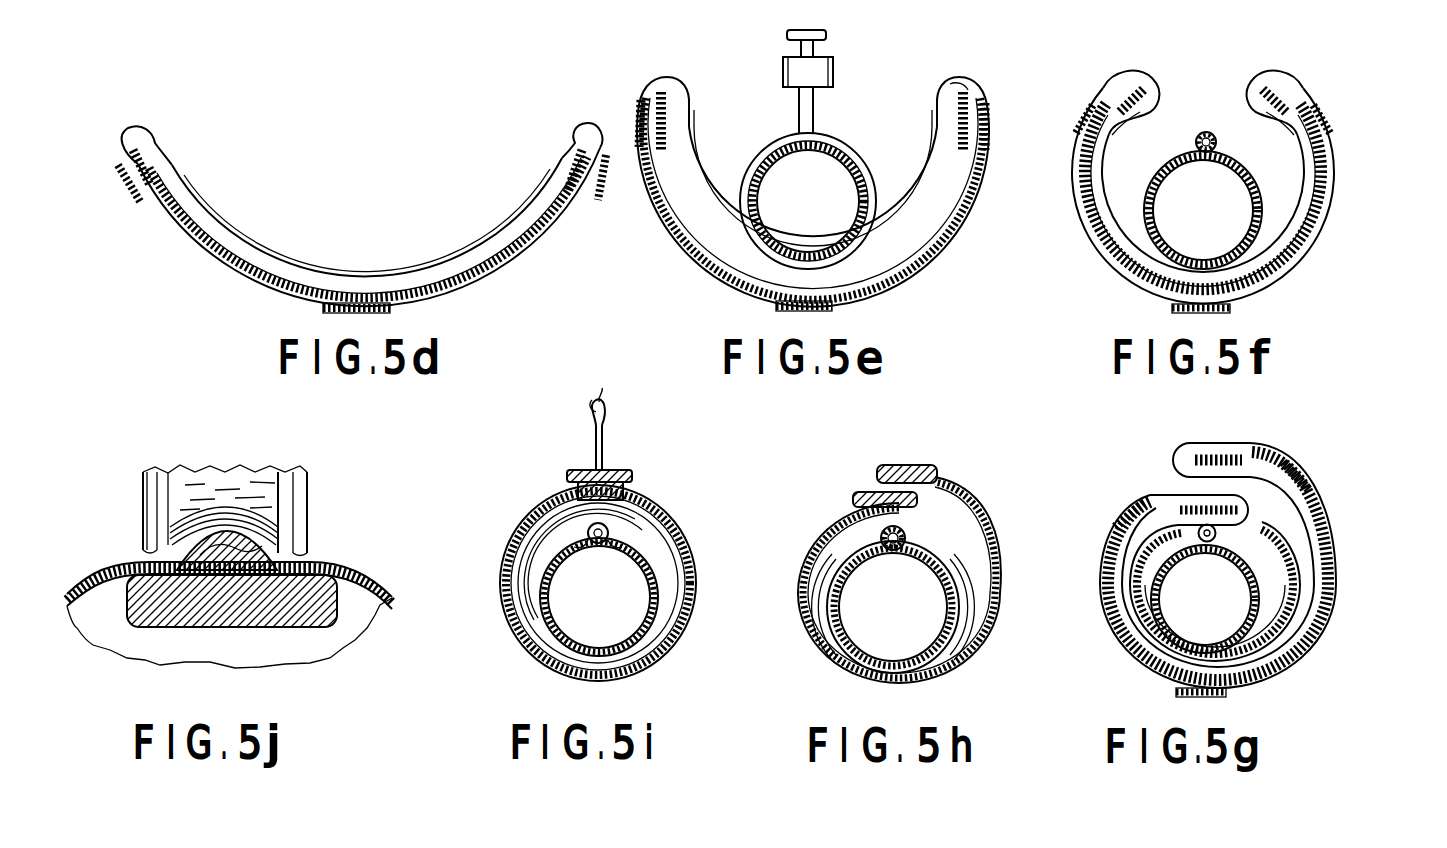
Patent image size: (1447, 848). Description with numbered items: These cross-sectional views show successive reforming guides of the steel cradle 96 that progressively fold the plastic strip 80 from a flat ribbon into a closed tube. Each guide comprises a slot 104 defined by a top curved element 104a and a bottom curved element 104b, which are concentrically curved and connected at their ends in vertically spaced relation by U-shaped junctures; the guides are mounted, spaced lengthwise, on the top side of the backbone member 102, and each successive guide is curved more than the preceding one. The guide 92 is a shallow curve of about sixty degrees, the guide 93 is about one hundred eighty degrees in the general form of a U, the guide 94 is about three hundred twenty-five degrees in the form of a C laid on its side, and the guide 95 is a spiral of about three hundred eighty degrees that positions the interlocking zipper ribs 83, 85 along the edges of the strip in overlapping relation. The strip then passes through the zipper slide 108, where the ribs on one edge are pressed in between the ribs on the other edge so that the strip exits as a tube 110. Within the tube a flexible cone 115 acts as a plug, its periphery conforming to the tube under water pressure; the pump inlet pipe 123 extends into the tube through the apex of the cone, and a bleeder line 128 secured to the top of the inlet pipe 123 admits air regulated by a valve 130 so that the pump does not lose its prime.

In FIG. 5D, the plastic strip 80 is at (530, 247).
In FIG. 5E, the plastic strip 80 is at (890, 268).
In FIG. 5F, the plastic strip 80 is at (1098, 222).
In FIG. 5J, the plastic strip 80 is at (362, 573).
In FIG. 5I, the plastic strip 80 is at (508, 620).
In FIG. 5H, the plastic strip 80 is at (803, 610).
In FIG. 5G, the plastic strip 80 is at (1108, 630).
In FIG. 5D, the zipper rib 83 is at (145, 168).
In FIG. 5E, the zipper rib 83 is at (672, 98).
In FIG. 5F, the zipper rib 83 is at (1127, 97).
In FIG. 5J, the zipper rib 83 is at (257, 570).
In FIG. 5I, the zipper rib 83 is at (633, 488).
In FIG. 5H, the zipper rib 83 is at (910, 507).
In FIG. 5G, the zipper rib 83 is at (1250, 523).
In FIG. 5D, the zipper rib 85 is at (584, 137).
In FIG. 5E, the zipper rib 85 is at (968, 97).
In FIG. 5F, the zipper rib 85 is at (1300, 90).
In FIG. 5J, the zipper rib 85 is at (250, 535).
In FIG. 5I, the zipper rib 85 is at (607, 472).
In FIG. 5H, the zipper rib 85 is at (907, 463).
In FIG. 5G, the zipper rib 85 is at (1217, 445).
In FIG. 5D, the reforming guide 92 is at (587, 125).
In FIG. 5E, the reforming guide 93 is at (950, 87).
In FIG. 5F, the reforming guide 94 is at (1336, 203).
In FIG. 5G, the reforming guide 95 is at (1312, 500).
In FIG. 5D, the steel cradle 96 is at (122, 168).
In FIG. 5E, the steel cradle 96 is at (641, 102).
In FIG. 5F, the steel cradle 96 is at (1075, 142).
In FIG. 5G, the steel cradle 96 is at (1296, 473).
In FIG. 5D, the backbone member 102 is at (323, 308).
In FIG. 5E, the backbone member 102 is at (777, 307).
In FIG. 5F, the backbone member 102 is at (1173, 308).
In FIG. 5G, the backbone member 102 is at (1177, 691).
In FIG. 5D, the slot 104 is at (535, 213).
In FIG. 5E, the slot 104 is at (942, 188).
In FIG. 5F, the slot 104 is at (1332, 170).
In FIG. 5G, the slot 104 is at (1310, 550).
In FIG. 5D, the top curved element 104a is at (308, 262).
In FIG. 5E, the top curved element 104a is at (700, 212).
In FIG. 5F, the top curved element 104a is at (1298, 177).
In FIG. 5G, the top curved element 104a is at (1258, 562).
In FIG. 5D, the bottom curved element 104b is at (228, 272).
In FIG. 5E, the bottom curved element 104b is at (682, 242).
In FIG. 5F, the bottom curved element 104b is at (1298, 263).
In FIG. 5G, the bottom curved element 104b is at (1305, 643).
In FIG. 5J, the zipper slide 108 is at (300, 598).
In FIG. 5I, the zipper slide 108 is at (575, 468).
In FIG. 5I, the tube 110 is at (695, 592).
In FIG. 5I, the cone 115 is at (643, 537).
In FIG. 5E, the inlet pipe 123 is at (858, 170).
In FIG. 5F, the inlet pipe 123 is at (1163, 167).
In FIG. 5I, the inlet pipe 123 is at (657, 585).
In FIG. 5F, the bleeder line 128 is at (1207, 132).
In FIG. 5I, the bleeder line 128 is at (587, 533).
In FIG. 5H, the bleeder line 128 is at (883, 537).
In FIG. 5G, the bleeder line 128 is at (1203, 528).
In FIG. 5E, the valve 130 is at (815, 110).